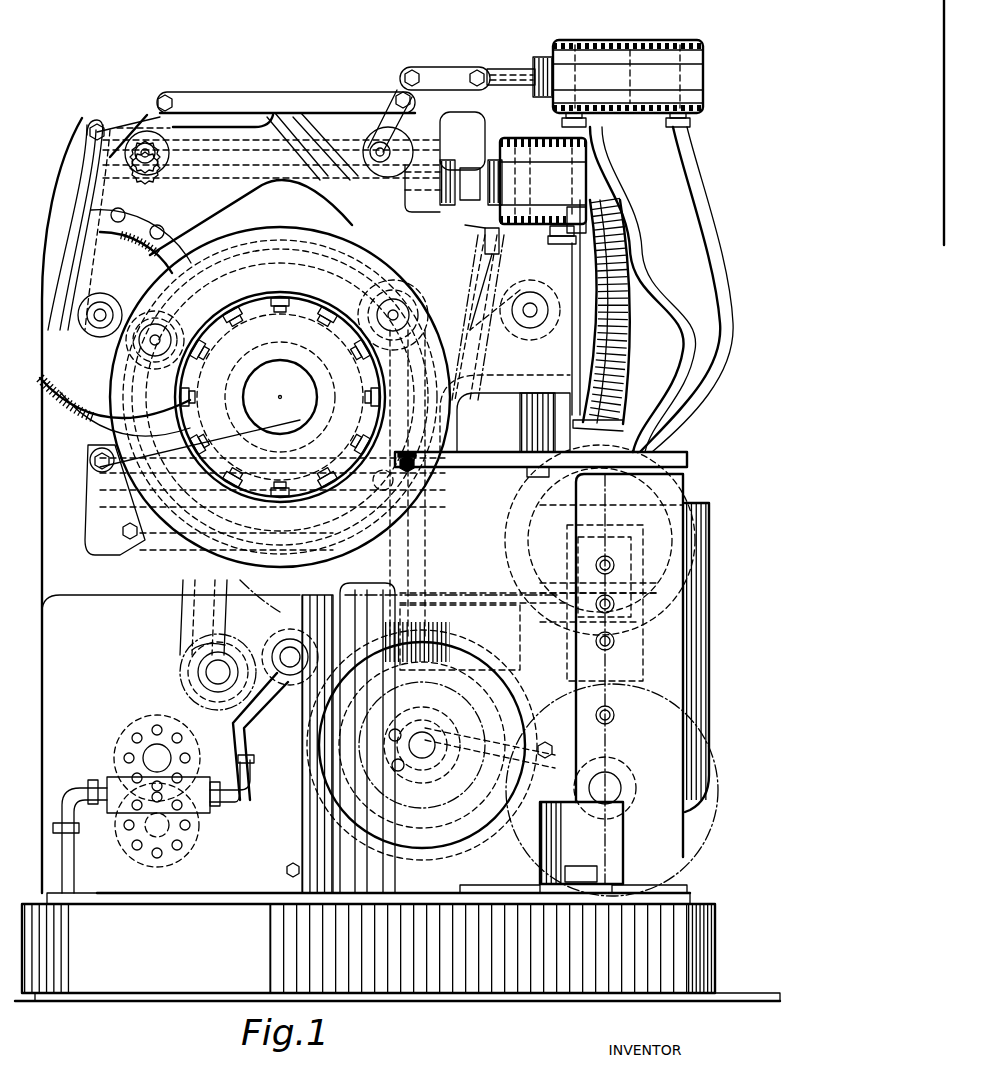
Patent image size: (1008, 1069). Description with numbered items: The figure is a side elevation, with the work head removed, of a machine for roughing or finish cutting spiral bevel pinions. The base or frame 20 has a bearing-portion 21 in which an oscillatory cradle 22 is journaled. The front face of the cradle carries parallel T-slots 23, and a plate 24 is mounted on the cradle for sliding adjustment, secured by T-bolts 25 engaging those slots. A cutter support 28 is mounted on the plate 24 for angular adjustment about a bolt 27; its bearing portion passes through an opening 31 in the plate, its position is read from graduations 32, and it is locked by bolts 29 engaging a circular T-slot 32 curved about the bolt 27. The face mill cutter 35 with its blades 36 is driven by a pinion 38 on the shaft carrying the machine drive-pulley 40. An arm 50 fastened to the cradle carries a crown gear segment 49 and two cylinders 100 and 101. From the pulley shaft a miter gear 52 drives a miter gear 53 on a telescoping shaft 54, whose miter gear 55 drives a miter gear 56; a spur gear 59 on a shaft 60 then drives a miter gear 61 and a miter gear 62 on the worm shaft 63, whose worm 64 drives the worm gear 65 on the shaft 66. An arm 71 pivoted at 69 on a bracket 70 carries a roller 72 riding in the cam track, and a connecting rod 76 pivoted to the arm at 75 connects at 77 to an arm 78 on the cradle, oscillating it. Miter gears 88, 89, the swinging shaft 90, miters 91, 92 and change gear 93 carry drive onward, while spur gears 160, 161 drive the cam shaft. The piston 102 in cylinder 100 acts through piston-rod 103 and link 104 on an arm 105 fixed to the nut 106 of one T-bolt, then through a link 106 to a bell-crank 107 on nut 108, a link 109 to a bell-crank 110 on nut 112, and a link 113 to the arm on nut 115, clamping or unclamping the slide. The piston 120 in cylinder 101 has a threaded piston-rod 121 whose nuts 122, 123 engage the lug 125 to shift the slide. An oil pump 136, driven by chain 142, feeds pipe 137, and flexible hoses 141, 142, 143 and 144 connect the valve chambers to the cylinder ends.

The base or frame 20 is at (680, 640).
The bearing-portion 21 is at (57, 237).
The oscillatory cradle 22 is at (560, 425).
The T-slots 23 is at (82, 496).
The plate 24 is at (127, 192).
The T-bolts 25 is at (168, 148).
The bolt 27 is at (94, 315).
The cutter support 28 is at (170, 330).
The bolts 29 is at (330, 312).
The opening 31 is at (262, 178).
The graduations and circular T-slot 32 is at (113, 247).
The face mill cutter 35 is at (280, 397).
The blades 36 is at (283, 297).
The pinion 38 is at (195, 300).
The machine drive-pulley 40 is at (205, 240).
The crown gear segment 49 is at (628, 337).
The arm 50 is at (505, 413).
The miter gear 52 is at (280, 397).
The miter gear 53 is at (130, 375).
The telescoping shaft 54 is at (195, 575).
The miter gear 55 is at (195, 655).
The miter gear 56 is at (192, 675).
The spur gear 59 is at (280, 612).
The shaft 60 is at (282, 652).
The miter gear 61 is at (255, 700).
The miter gear 62 is at (366, 731).
The worm shaft 63 is at (468, 660).
The worm 64 is at (445, 645).
The worm gear 65 is at (470, 835).
The shaft 66 is at (420, 760).
The pivot 69 is at (307, 784).
The bracket or support 70 is at (265, 852).
The arm 71 is at (395, 818).
The roller 72 is at (425, 680).
The pivot 75 is at (560, 752).
The connecting rod 76 is at (518, 440).
The pivotal connection 77 is at (528, 292).
The arm 78 is at (497, 252).
The miter gear 88 is at (398, 768).
The miter gear 89 is at (386, 737).
The swinging shaft 90 is at (415, 568).
The miter gear 91 is at (410, 320).
The miter gear 92 is at (420, 300).
The change gear 93 is at (425, 285).
The cylinder 100 is at (660, 42).
The cylinder 101 is at (590, 181).
The piston 102 is at (690, 75).
The piston-rod 103 is at (500, 70).
The link 104 is at (440, 70).
The arm 105 is at (396, 92).
The nut and link 106 is at (235, 100).
The bell-crank 107 is at (150, 143).
The nut 108 is at (140, 127).
The link 109 is at (80, 210).
The bell-crank 110 is at (120, 530).
The nut 112 is at (140, 512).
The link 113 is at (253, 590).
The nut 115 is at (397, 455).
The piston 120 is at (537, 183).
The piston-rod 121 is at (496, 165).
The nut 122 is at (458, 168).
The nut 123 is at (470, 168).
The lug 125 is at (432, 214).
The oil pump 136 is at (200, 810).
The pipe 137 is at (245, 757).
The flexible hose 141 is at (480, 345).
The flexible hose and chain 142 is at (538, 325).
The flexible hose 143 is at (640, 262).
The flexible hose 144 is at (708, 244).
The spur gear 160 is at (432, 845).
The spur gear 161 is at (665, 705).